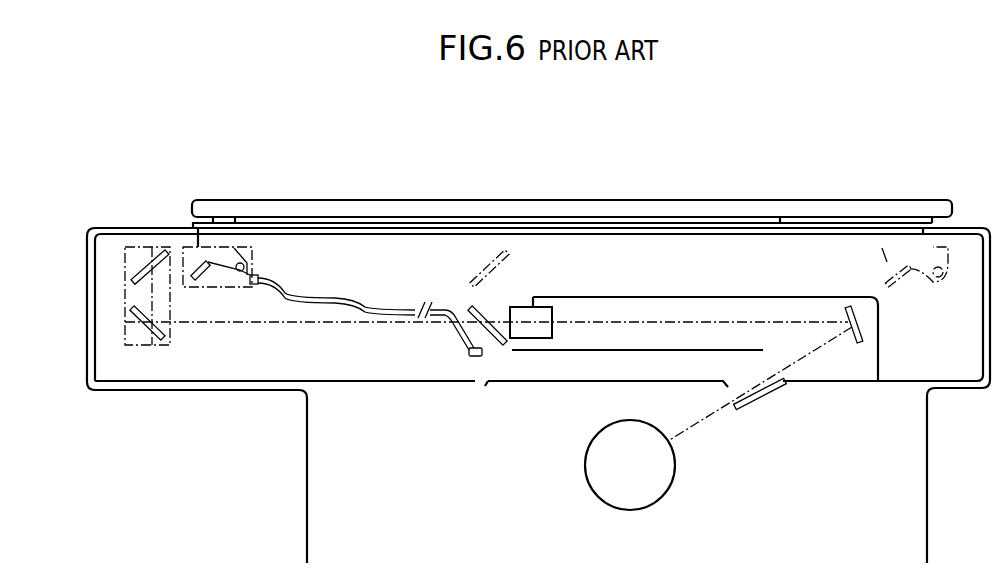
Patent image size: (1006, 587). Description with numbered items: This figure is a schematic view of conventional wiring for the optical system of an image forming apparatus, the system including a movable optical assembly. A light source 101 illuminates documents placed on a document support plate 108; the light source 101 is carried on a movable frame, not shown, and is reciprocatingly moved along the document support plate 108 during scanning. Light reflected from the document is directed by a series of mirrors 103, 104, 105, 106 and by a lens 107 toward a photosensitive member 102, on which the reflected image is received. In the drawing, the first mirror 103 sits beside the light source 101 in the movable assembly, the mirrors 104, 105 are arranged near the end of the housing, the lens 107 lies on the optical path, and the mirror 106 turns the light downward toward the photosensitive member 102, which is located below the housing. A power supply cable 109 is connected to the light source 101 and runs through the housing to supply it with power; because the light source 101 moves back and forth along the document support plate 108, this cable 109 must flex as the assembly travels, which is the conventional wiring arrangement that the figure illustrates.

The light source 101 is at (247, 290).
The photosensitive member 102 is at (630, 490).
The mirror 103 is at (208, 292).
The mirror 104 is at (145, 260).
The mirror 105 is at (130, 327).
The mirror 106 is at (862, 331).
The lens 107 is at (522, 307).
The document support plate 108 is at (402, 232).
The power supply cable 109 is at (355, 300).